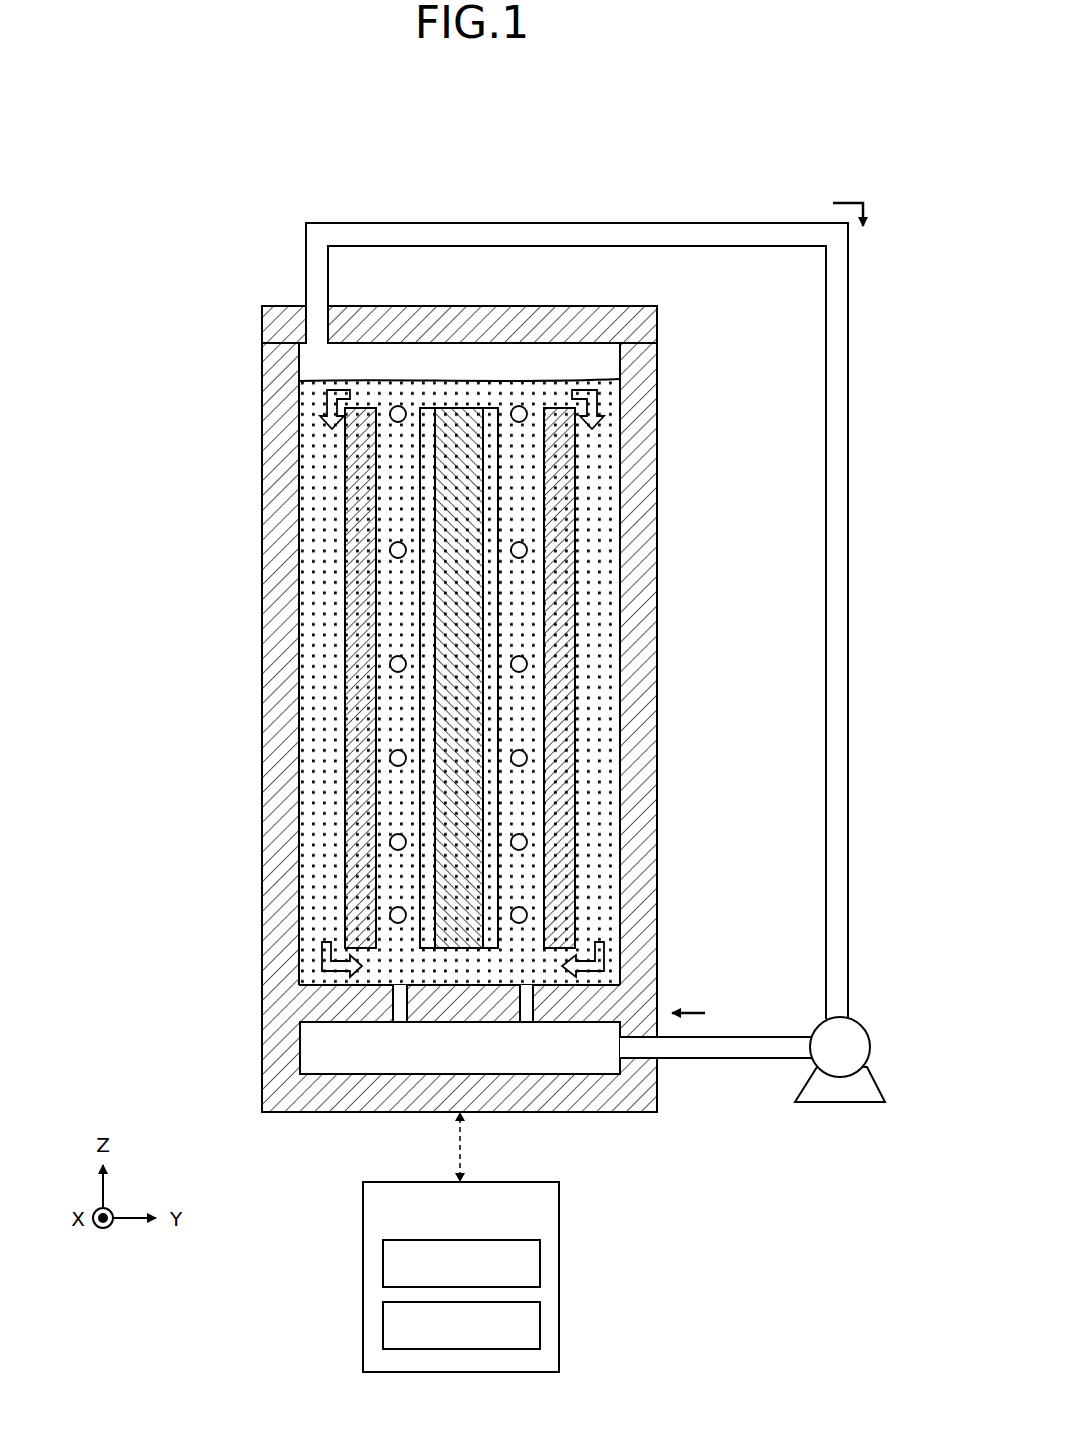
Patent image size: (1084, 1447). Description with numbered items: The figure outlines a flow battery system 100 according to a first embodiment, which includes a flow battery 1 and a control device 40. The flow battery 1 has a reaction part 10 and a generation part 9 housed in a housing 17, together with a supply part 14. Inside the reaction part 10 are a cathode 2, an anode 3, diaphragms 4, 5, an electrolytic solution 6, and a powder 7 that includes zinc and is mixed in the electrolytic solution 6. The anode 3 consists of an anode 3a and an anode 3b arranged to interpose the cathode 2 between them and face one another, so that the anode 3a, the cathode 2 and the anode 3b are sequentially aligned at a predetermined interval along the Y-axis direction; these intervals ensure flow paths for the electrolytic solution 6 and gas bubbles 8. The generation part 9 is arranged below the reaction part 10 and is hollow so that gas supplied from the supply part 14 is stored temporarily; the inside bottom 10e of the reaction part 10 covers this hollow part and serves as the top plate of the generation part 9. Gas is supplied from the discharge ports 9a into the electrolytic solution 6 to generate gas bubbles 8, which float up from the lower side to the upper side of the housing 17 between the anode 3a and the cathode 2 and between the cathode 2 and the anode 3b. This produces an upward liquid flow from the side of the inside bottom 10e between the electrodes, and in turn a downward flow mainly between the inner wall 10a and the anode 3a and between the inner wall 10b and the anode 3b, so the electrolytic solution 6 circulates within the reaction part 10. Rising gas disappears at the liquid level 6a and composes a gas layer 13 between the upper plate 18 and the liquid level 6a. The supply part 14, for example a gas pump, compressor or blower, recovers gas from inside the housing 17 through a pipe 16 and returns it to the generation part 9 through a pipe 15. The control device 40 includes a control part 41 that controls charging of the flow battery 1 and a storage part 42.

The flow battery system 100 is at (680, 145).
The flow battery 1 is at (747, 198).
The cathode 2 is at (452, 490).
The anode 3 is at (369, 678).
The anode 3a is at (355, 542).
The anode 3b is at (553, 576).
The diaphragm 4 is at (430, 703).
The diaphragm 5 is at (510, 706).
The electrolytic solution 6 is at (310, 420).
The liquid level 6a is at (600, 377).
The powder 7 is at (313, 758).
The gas bubble 8 is at (390, 913).
The generation part 9 is at (298, 1048).
The discharge port 9a is at (400, 1000).
The reaction part 10 is at (626, 600).
The inner wall 10a is at (312, 850).
The inner wall 10b is at (612, 870).
The inside bottom 10e is at (600, 968).
The gas layer 13 is at (307, 363).
The supply part 14 is at (870, 1043).
The pipe 15 is at (681, 1062).
The pipe 16 is at (850, 783).
The housing 17 is at (657, 766).
The upper plate 18 is at (656, 326).
The control device 40 is at (488, 1251).
The control part 41 is at (541, 1262).
The storage part 42 is at (541, 1322).